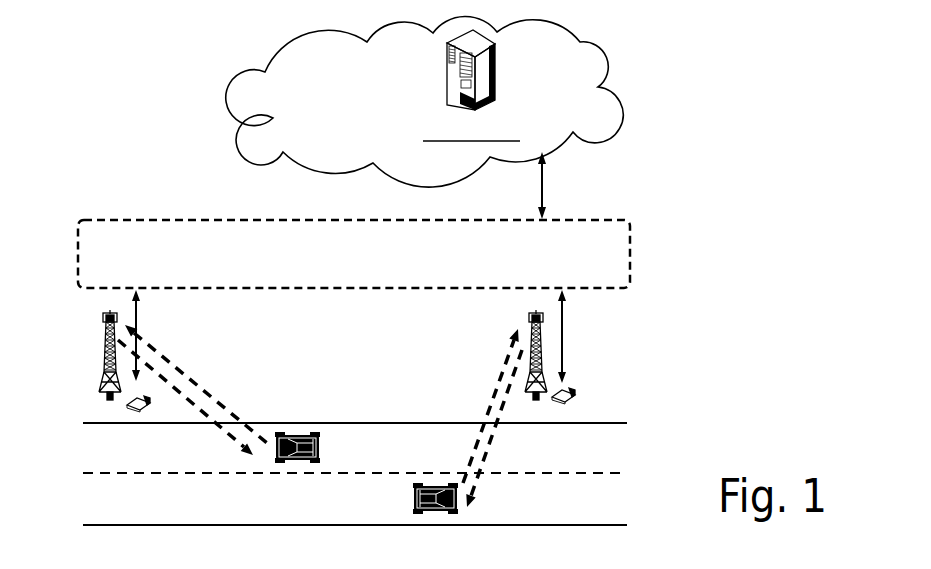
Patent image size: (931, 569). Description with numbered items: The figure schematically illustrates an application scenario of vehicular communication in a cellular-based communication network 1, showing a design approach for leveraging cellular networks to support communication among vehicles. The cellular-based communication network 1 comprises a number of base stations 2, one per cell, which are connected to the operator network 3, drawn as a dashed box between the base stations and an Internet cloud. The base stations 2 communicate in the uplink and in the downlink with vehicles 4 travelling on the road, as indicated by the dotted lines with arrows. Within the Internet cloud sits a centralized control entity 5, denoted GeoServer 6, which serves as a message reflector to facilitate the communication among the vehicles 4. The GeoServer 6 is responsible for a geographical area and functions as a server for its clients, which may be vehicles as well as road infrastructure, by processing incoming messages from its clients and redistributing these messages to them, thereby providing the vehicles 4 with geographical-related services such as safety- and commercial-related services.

The cellular-based communication network 1 is at (397, 290).
The base station 2 is at (105, 372).
The operator network 3 is at (117, 220).
The vehicle 4 is at (311, 432).
The centralized control entity 5 is at (519, 70).
The GeoServer 6 is at (485, 55).